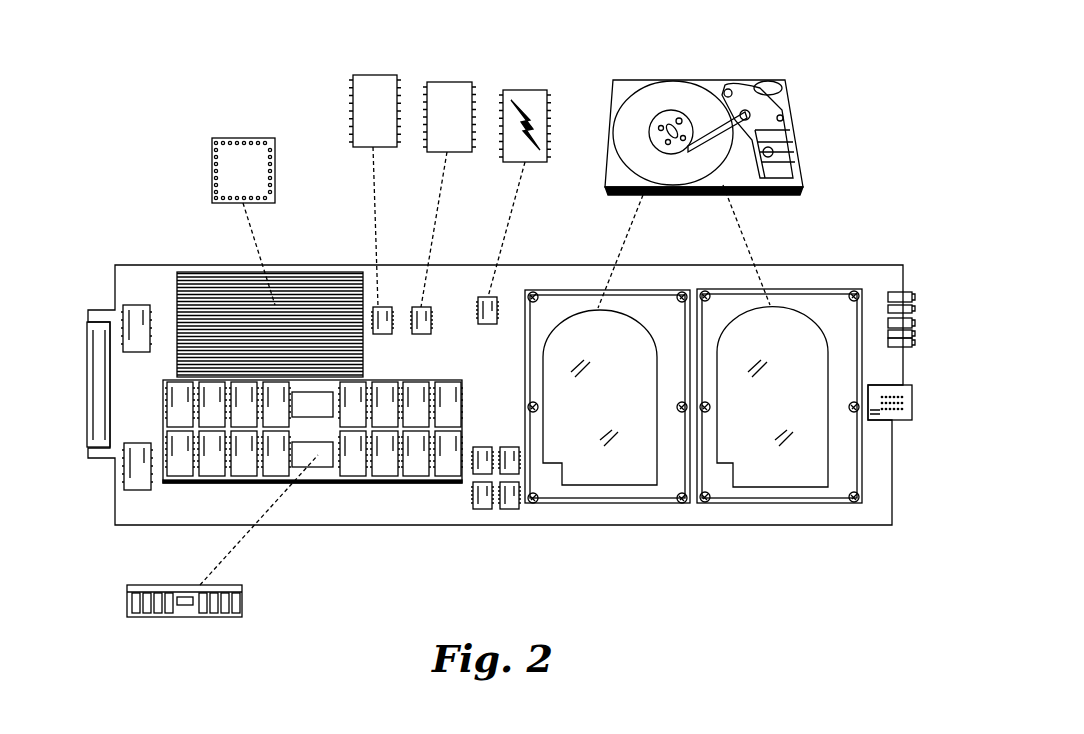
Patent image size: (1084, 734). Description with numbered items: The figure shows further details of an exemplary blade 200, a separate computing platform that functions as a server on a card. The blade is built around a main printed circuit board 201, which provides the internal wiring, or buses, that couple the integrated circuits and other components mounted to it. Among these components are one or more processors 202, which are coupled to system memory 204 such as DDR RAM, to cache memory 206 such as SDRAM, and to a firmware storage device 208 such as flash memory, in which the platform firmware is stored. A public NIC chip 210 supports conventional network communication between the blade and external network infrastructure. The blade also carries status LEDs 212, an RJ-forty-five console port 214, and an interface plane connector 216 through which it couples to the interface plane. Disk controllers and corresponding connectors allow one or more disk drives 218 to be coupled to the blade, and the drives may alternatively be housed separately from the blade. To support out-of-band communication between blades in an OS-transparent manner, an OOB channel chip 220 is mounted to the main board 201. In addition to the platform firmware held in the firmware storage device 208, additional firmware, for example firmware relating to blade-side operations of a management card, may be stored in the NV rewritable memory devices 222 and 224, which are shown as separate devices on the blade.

The blade 200 is at (628, 593).
The main printed circuit board 201 is at (807, 270).
The processor 202 is at (272, 168).
The system memory 204 is at (245, 598).
The cache memory 206 is at (483, 497).
The firmware storage device 208 is at (540, 97).
The public NIC chip 210 is at (127, 473).
The status LEDs 212 is at (912, 290).
The RJ-45 console port 214 is at (910, 410).
The interface plane connector 216 is at (88, 380).
The disk drive 218 is at (793, 130).
The OOB channel chip 220 is at (133, 320).
The NV rewritable memory device 222 is at (382, 82).
The NV rewritable memory device 224 is at (457, 88).